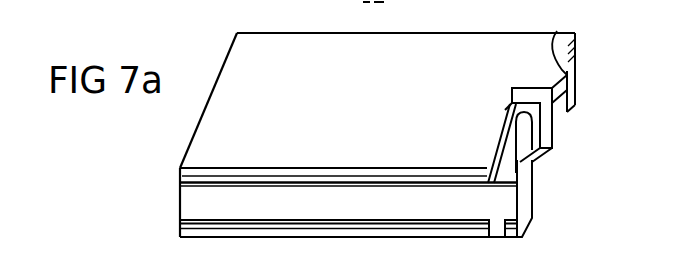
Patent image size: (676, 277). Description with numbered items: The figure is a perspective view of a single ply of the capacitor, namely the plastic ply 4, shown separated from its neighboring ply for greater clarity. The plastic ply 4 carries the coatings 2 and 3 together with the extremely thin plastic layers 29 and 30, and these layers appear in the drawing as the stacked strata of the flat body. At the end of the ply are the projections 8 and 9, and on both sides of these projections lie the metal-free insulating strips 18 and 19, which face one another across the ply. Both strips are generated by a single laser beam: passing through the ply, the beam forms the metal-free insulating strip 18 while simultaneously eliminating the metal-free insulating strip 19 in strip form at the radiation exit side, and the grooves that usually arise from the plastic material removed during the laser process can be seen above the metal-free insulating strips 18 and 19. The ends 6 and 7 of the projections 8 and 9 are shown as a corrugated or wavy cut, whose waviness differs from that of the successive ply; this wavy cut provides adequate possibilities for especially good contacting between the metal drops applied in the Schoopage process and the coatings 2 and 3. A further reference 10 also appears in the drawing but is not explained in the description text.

The extremely thin plastic layer 29 is at (181, 172).
The coating 2 is at (181, 183).
The plastic ply 4 is at (195, 206).
The coating 3 is at (181, 224).
The extremely thin plastic layer 30 is at (200, 232).
The metal-free insulating strip 19 is at (494, 238).
The metal-free insulating strip 18 is at (487, 164).
The projection 8 is at (522, 142).
The end of projection 6 is at (525, 196).
The intermediate contact plate 10 is at (548, 127).
The end of projection 7 is at (576, 72).
The projection 9 is at (557, 31).